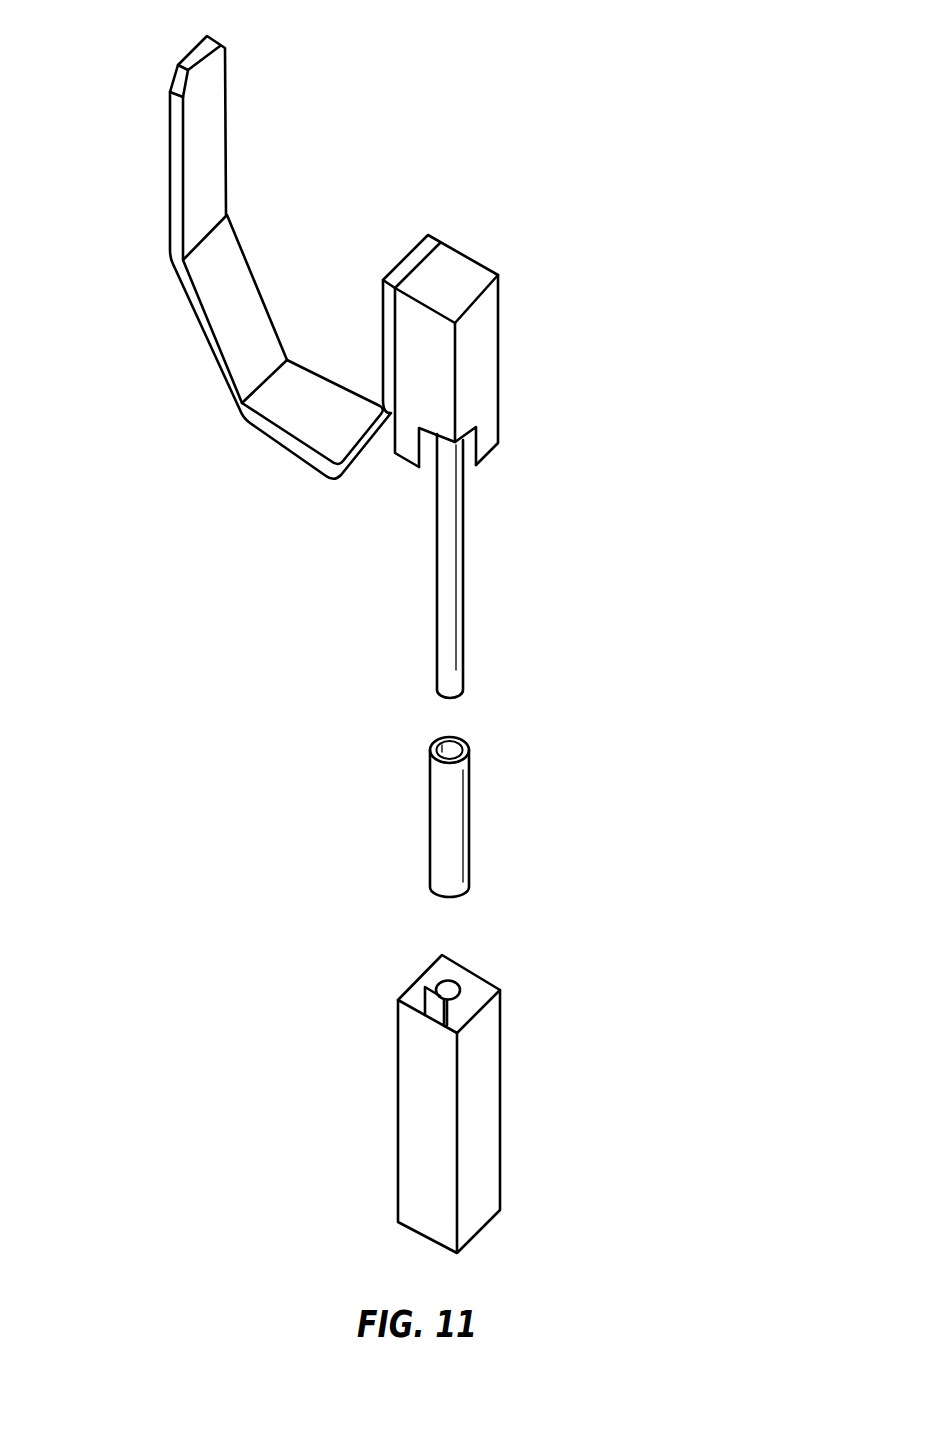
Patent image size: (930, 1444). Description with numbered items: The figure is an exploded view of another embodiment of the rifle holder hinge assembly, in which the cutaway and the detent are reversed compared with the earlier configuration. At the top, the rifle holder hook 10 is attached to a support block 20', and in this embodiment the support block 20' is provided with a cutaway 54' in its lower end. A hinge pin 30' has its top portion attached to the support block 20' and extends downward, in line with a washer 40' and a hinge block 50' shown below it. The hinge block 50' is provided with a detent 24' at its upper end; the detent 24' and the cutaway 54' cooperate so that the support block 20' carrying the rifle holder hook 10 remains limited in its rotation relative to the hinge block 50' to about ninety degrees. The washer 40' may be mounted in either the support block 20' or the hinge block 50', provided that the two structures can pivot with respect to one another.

The rifle holder hook 10 is at (182, 163).
The support block 20' is at (498, 351).
The cutaway 54' is at (407, 498).
The hinge pin 30' is at (497, 566).
The washer 40' is at (501, 817).
The hinge block 50' is at (515, 1104).
The detent 24' is at (383, 1037).